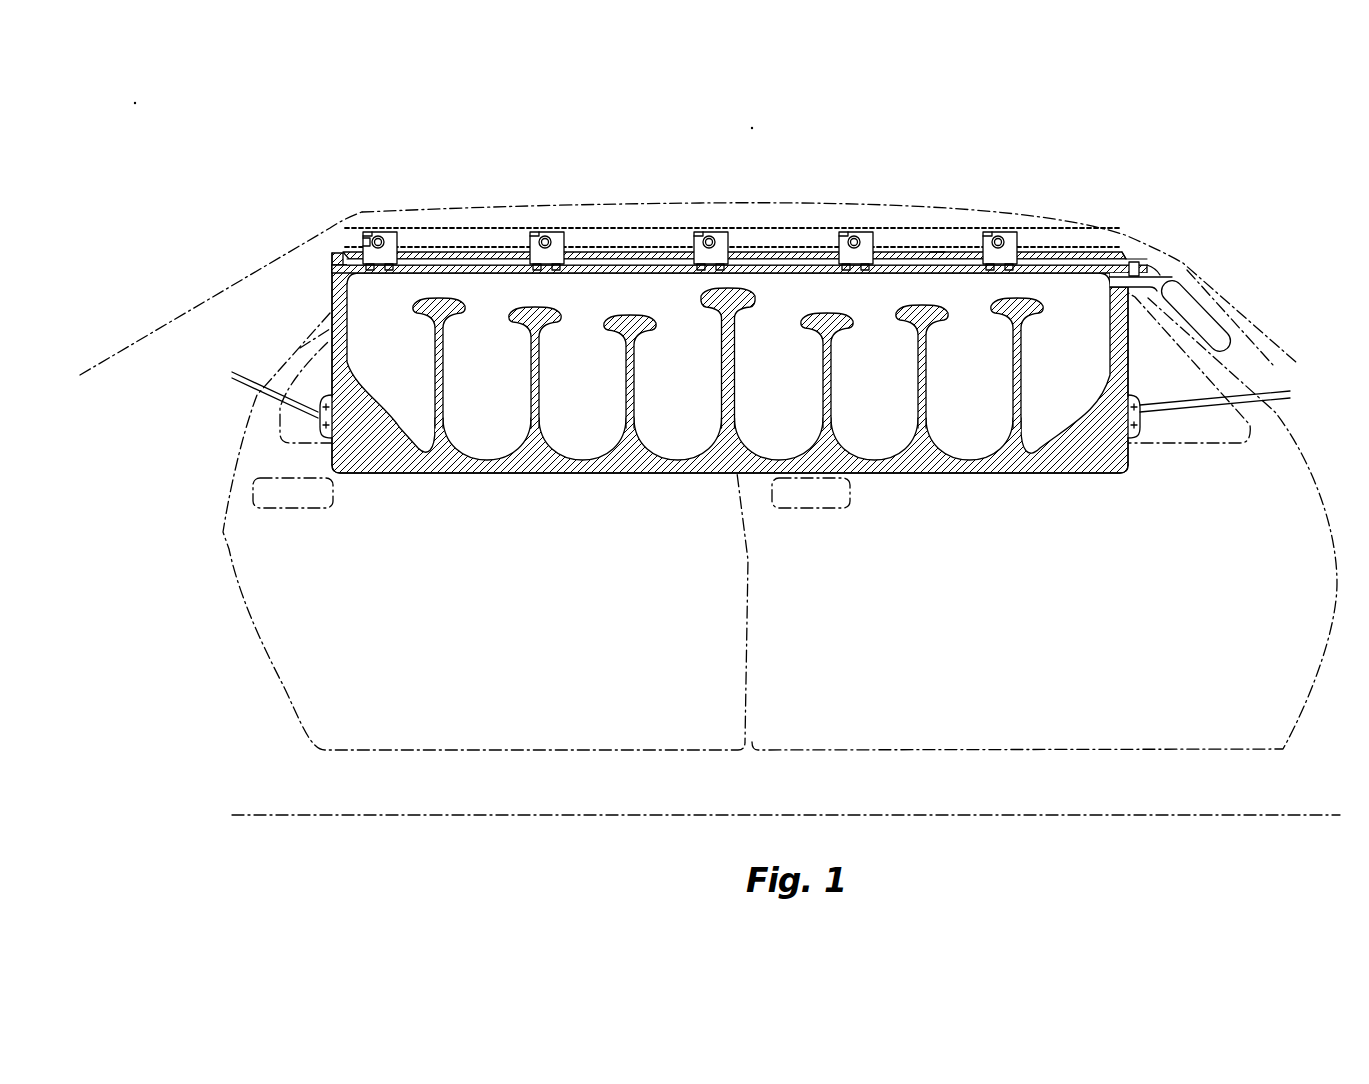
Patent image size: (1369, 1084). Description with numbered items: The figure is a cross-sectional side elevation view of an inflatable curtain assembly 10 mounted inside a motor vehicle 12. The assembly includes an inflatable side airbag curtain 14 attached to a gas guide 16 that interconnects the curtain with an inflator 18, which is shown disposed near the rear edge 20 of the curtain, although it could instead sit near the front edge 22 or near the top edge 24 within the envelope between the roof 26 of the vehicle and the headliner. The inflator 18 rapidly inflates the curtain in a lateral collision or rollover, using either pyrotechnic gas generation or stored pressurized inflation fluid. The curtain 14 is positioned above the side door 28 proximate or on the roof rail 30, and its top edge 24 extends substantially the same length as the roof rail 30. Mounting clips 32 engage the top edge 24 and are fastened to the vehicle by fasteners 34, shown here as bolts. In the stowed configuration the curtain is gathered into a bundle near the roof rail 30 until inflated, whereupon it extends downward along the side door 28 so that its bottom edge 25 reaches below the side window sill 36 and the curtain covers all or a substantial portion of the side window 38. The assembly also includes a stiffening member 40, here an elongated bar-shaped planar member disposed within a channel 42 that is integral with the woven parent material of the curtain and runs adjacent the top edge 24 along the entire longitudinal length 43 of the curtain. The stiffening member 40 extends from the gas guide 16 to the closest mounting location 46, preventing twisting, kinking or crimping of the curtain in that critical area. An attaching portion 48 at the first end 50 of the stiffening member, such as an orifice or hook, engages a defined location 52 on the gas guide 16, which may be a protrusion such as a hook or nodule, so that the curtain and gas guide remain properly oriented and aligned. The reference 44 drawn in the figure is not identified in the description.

The inflatable curtain assembly 10 is at (771, 350).
The motor vehicle 12 is at (182, 295).
The inflatable side airbag curtain 14 is at (748, 411).
The gas guide 16 is at (1168, 279).
The inflator 18 is at (1199, 314).
The rear edge 20 is at (1130, 370).
The front edge 22 is at (332, 298).
The top edge 24 is at (745, 201).
The bottom edge 25 is at (860, 475).
The roof 26 is at (487, 206).
The side door 28 is at (536, 613).
The roof rail 30 is at (665, 237).
The mounting clips 32 is at (370, 238).
The fasteners 34 is at (368, 243).
The side window sill 36 is at (978, 440).
The side window 38 is at (472, 428).
The stiffening member 40 is at (1073, 254).
The channel 42 is at (935, 250).
The longitudinal length 43 is at (608, 251).
The flange 44 is at (1112, 283).
The closest mounting location 46 is at (1045, 262).
The attaching portion 48 is at (1213, 228).
The first end 50 is at (1140, 265).
The defined location 52 is at (1136, 263).